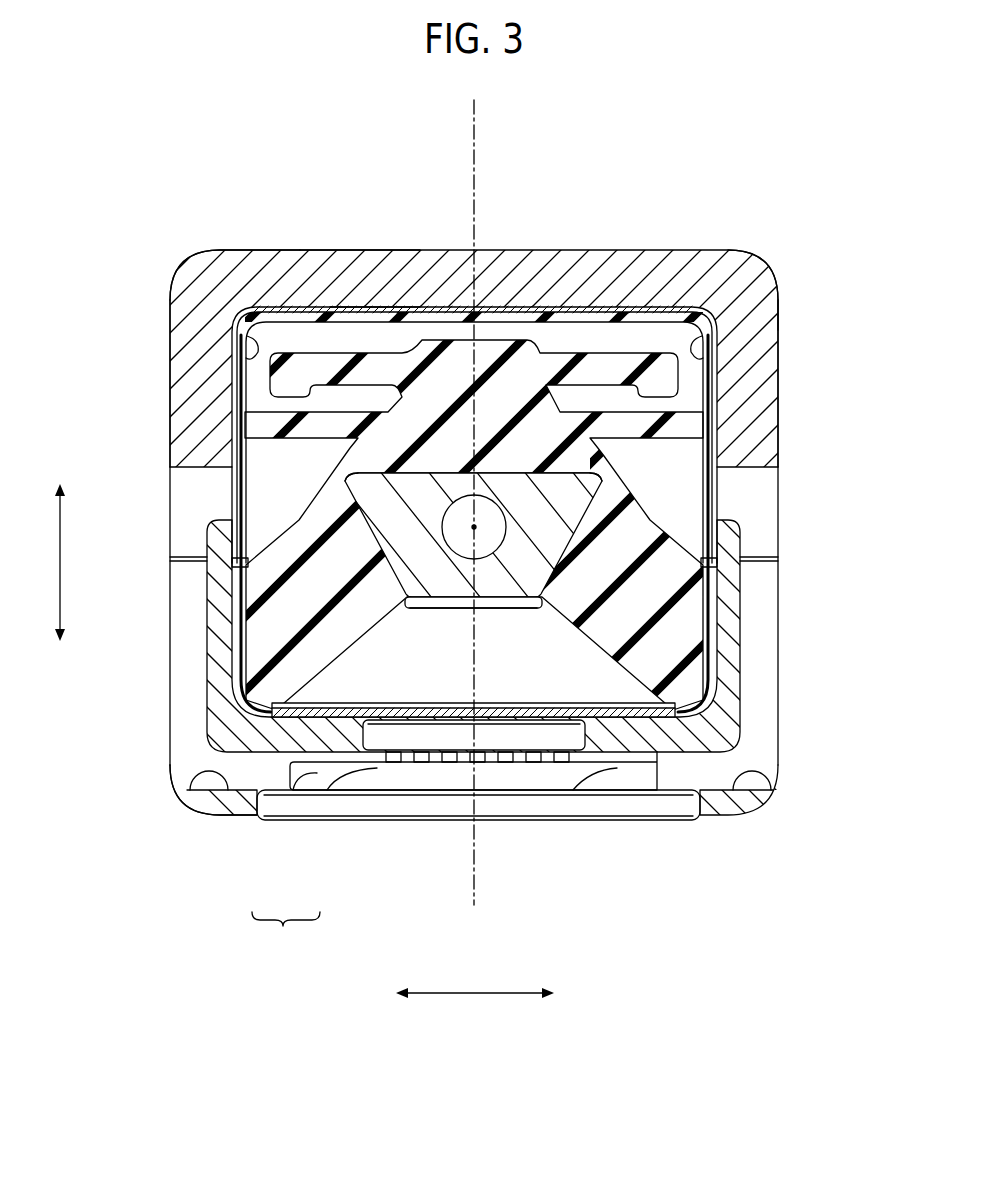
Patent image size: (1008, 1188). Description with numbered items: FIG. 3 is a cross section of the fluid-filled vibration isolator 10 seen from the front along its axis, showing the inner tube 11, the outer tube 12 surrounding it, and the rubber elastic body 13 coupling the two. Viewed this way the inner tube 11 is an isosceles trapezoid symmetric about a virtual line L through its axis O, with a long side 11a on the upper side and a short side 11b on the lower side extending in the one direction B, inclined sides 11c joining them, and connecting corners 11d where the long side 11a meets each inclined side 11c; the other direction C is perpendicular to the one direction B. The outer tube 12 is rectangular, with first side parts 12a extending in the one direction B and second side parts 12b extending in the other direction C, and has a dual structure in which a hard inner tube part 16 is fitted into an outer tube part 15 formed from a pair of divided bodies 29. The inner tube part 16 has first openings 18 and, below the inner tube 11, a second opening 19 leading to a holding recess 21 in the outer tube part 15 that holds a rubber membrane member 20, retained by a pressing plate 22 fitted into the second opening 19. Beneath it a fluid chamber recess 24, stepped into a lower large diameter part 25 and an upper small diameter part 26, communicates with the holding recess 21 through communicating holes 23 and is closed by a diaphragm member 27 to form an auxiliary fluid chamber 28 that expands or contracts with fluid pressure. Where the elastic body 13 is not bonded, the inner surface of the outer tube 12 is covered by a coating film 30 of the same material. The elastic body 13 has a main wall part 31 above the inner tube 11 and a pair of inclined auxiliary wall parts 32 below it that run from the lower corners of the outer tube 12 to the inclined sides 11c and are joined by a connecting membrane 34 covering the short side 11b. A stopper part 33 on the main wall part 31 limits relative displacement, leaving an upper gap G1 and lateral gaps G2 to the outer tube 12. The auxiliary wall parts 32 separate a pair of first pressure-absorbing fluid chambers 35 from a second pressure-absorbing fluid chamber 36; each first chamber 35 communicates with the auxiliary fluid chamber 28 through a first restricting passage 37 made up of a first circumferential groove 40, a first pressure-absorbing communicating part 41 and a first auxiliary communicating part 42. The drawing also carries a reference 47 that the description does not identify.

The vibration isolator 10 is at (756, 138).
The inner tube 11 is at (355, 583).
The long side 11a is at (447, 430).
The short side 11b is at (460, 609).
The inclined side 11c is at (236, 660).
The connecting corner 11d is at (348, 480).
The outer tube 12 is at (199, 246).
The first side part 12a is at (247, 268).
The second side part 12b is at (180, 352).
The elastic body 13 is at (238, 690).
The outer tube part 15 is at (305, 262).
The inner tube part 16 is at (377, 305).
The first opening 18 is at (240, 577).
The second opening 19 is at (656, 718).
The membrane member 20 is at (428, 735).
The holding recess 21 is at (383, 727).
The pressing plate 22 is at (667, 717).
The communicating hole 23 is at (516, 758).
The fluid chamber recess 24 is at (286, 931).
The large diameter part 25 is at (262, 812).
The small diameter part 26 is at (305, 792).
The diaphragm member 27 is at (610, 803).
The auxiliary fluid chamber 28 is at (319, 800).
The divided body 29 is at (745, 272).
The coating film 30 is at (652, 316).
The main wall part 31 is at (610, 420).
The auxiliary wall part 32 is at (356, 550).
The stopper part 33 is at (556, 355).
The connecting membrane 34 is at (500, 609).
The first pressure-absorbing fluid chamber 35 is at (258, 504).
The second pressure-absorbing fluid chamber 36 is at (544, 680).
The first restricting passage 37 is at (178, 537).
The first circumferential groove 40 is at (215, 727).
The first pressure-absorbing communicating part 41 is at (205, 468).
The first auxiliary communicating part 42 is at (228, 790).
The bumps 47 is at (392, 753).
The upper gap G1 is at (463, 340).
The lateral gap G2 is at (237, 340).
The virtual line L is at (474, 216).
The axis O is at (478, 522).
The one direction B is at (475, 1008).
The other direction C is at (48, 562).